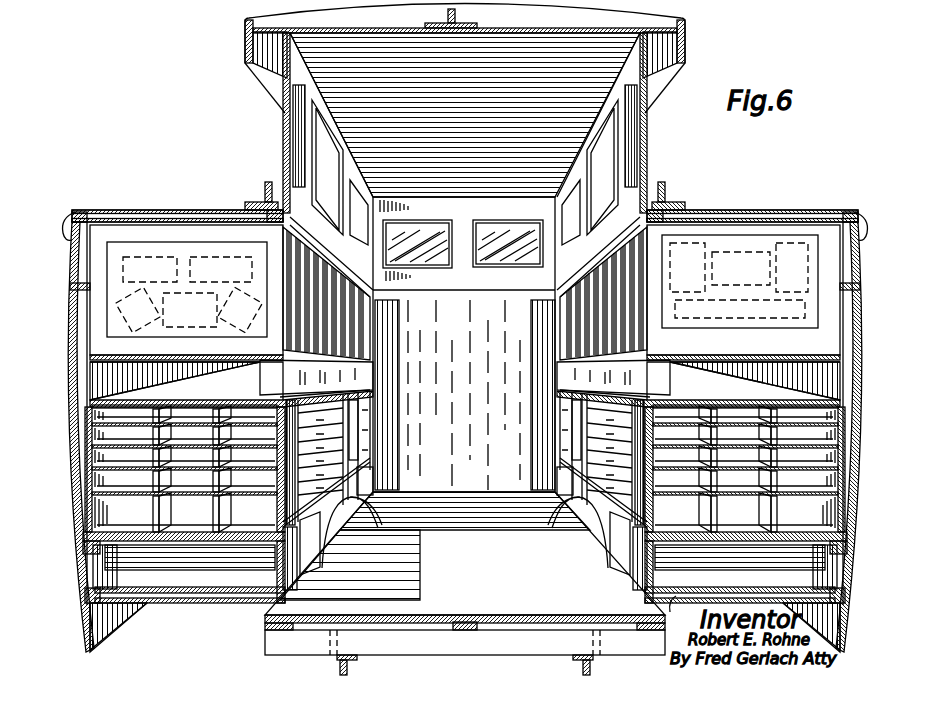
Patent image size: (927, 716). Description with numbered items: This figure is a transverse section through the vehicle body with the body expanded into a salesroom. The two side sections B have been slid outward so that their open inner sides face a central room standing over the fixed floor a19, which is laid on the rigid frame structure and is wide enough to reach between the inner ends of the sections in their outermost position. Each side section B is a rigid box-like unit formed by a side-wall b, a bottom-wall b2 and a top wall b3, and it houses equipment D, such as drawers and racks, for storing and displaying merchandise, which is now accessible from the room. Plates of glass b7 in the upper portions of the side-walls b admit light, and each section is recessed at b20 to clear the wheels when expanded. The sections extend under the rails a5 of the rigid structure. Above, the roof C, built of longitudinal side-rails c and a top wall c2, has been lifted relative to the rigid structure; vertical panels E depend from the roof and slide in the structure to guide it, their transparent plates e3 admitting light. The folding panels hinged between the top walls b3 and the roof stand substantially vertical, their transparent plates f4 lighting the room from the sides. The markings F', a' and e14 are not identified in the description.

The roof C is at (694, 10).
The longitudinal side-rail c is at (245, 52).
The top wall c2 is at (538, 14).
The transparent plate f4 is at (283, 137).
The side wall panel F' is at (465, 165).
The rear wall a' is at (464, 344).
The vertical panel E is at (476, 208).
The transparent plate e3 is at (498, 257).
The fixed floor a19 is at (513, 615).
The recess b20 is at (378, 528).
The equipment D is at (612, 300).
The bottom-wall b2 is at (194, 603).
The side-wall b is at (72, 387).
The top wall b3 is at (200, 197).
The plate of glass b7 is at (465, 215).
The rail a5 is at (250, 201).
The side section B is at (465, 265).
The end member e14 is at (687, 606).